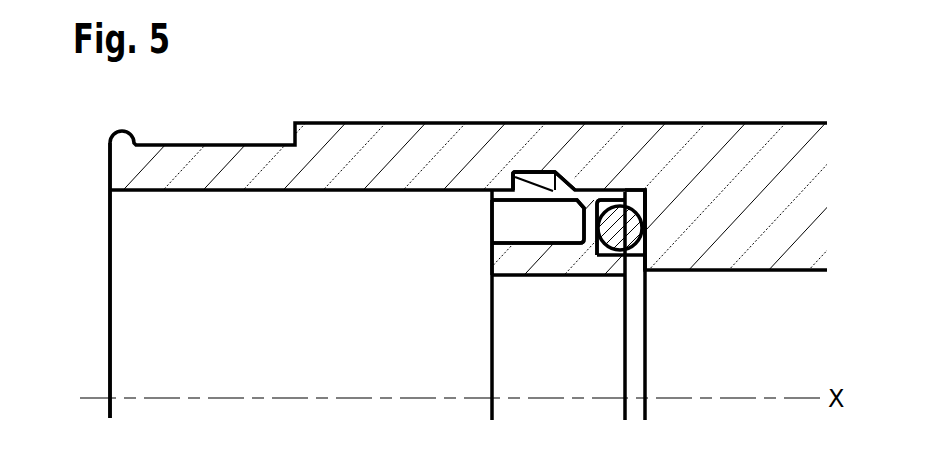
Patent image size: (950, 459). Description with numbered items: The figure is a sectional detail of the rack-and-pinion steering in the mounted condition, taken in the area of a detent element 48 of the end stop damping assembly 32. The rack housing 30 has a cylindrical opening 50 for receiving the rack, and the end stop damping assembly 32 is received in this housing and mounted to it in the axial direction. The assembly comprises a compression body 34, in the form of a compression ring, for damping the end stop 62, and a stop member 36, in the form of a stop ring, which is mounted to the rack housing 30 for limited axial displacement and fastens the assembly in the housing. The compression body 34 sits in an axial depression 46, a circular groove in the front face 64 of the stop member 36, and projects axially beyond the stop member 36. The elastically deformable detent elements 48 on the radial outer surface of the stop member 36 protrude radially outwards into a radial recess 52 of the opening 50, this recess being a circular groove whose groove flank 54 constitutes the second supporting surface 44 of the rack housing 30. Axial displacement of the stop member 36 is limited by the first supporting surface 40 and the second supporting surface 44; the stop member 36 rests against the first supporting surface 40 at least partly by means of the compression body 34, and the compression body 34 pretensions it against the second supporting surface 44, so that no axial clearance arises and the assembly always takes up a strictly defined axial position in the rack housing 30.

The rack housing 30 is at (800, 198).
The end stop damping assembly 32 is at (470, 267).
The compression body 34 is at (621, 232).
The stop member 36 is at (547, 262).
The first supporting surface 40 is at (645, 205).
The second supporting surface 44 is at (508, 176).
The groove flank 54 is at (534, 181).
The axial depression 46 is at (600, 200).
The detent elements 48 is at (545, 172).
The radial recess 52 is at (553, 170).
The end stop 62 is at (647, 220).
The front face 64 is at (490, 256).
The cylindrical opening 50 is at (140, 302).